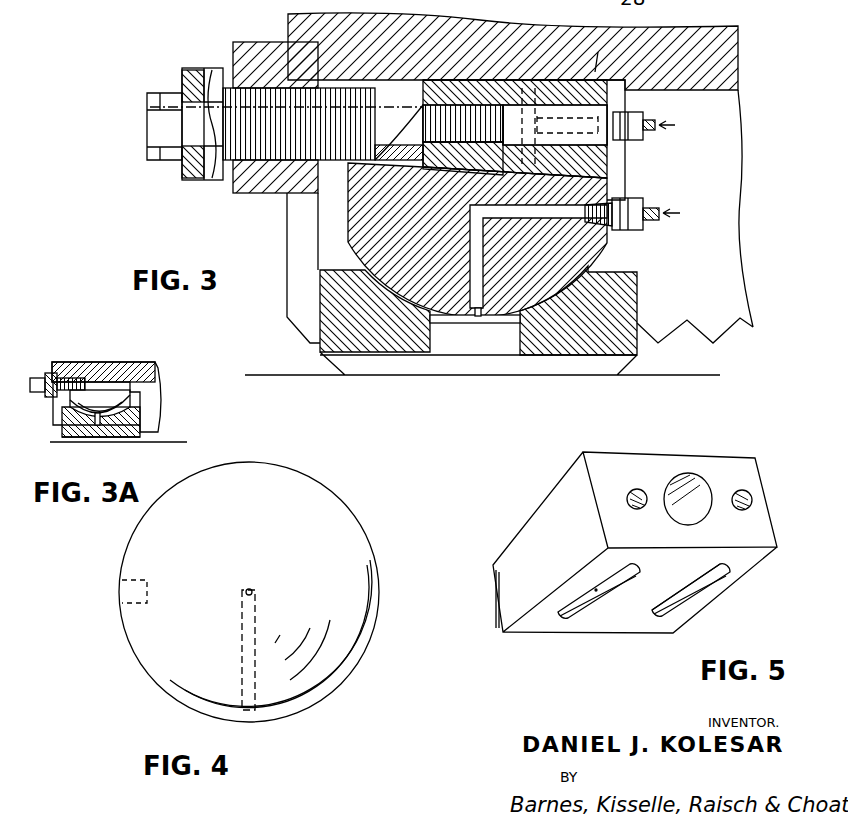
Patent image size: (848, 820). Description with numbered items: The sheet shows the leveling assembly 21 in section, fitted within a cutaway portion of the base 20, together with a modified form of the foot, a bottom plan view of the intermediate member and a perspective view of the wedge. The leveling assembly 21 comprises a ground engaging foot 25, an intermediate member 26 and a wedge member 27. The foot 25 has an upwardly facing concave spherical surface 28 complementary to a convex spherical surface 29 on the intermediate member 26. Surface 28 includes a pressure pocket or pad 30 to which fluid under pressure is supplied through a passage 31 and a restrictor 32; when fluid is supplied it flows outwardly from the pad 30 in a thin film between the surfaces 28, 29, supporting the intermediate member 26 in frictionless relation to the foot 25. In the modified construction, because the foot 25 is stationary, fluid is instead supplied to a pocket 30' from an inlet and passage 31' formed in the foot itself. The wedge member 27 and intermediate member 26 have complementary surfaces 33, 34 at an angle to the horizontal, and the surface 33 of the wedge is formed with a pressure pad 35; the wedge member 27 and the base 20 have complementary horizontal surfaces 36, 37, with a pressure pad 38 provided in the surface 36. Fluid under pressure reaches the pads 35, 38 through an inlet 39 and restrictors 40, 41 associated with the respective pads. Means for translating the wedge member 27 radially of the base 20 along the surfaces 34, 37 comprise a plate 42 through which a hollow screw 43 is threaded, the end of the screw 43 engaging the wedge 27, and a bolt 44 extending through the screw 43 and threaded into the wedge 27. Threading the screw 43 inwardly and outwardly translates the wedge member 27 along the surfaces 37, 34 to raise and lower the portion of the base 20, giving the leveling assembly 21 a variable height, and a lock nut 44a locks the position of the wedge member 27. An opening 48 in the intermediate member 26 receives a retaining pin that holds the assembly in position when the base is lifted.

In FIG. 3, the base 20 is at (740, 50).
In FIG. 3, the leveling assembly 21 is at (182, 200).
In FIG. 3, the ground engaging foot 25 is at (625, 302).
In FIG. 3A, the ground engaging foot 25 is at (135, 416).
In FIG. 3, the intermediate member 26 is at (598, 240).
In FIG. 3A, the intermediate member 26 is at (110, 398).
In FIG. 4, the intermediate member 26 is at (335, 506).
In FIG. 3, the wedge member 27 is at (598, 163).
In FIG. 3A, the wedge member 27 is at (157, 396).
In FIG. 3, the concave spherical surface 28 is at (596, 258).
In FIG. 3, the convex spherical surface 29 is at (530, 306).
In FIG. 3A, the convex spherical surface 29 is at (90, 405).
In FIG. 3, the pressure pocket or pad 30 is at (466, 361).
In FIG. 3A, the pressure pocket 30' is at (82, 447).
In FIG. 3, the passage 31 is at (611, 198).
In FIG. 4, the passage 31 is at (226, 650).
In FIG. 3A, the inlet and passage 31' is at (105, 453).
In FIG. 3, the restrictor 32 is at (500, 323).
In FIG. 3A, the restrictor 32 is at (97, 428).
In FIG. 4, the restrictor 32 is at (246, 596).
In FIG. 3, the angled surface of wedge member 33 is at (450, 168).
In FIG. 3, the angled surface of intermediate member 34 is at (421, 170).
In FIG. 3, the pressure pocket or pad 35 is at (556, 166).
In FIG. 3, the horizontal surface of wedge member 36 is at (604, 51).
In FIG. 3, the horizontal surface of base 37 is at (622, 78).
In FIG. 3, the pressure pad 38 is at (546, 86).
In FIG. 3, the inlet 39 is at (610, 106).
In FIG. 3, the restrictor 40 is at (510, 150).
In FIG. 5, the restrictor 40 is at (688, 592).
In FIG. 3, the restrictor 41 is at (522, 90).
In FIG. 3, the plate 42 is at (243, 52).
In FIG. 3A, the plate 42 is at (55, 372).
In FIG. 3, the hollow screw 43 is at (222, 165).
In FIG. 3, the bolt 44 is at (435, 108).
In FIG. 3, the lock nut 44a is at (188, 73).
In FIG. 3A, the lock nut 44a is at (37, 372).
In FIG. 4, the opening 48 is at (123, 576).